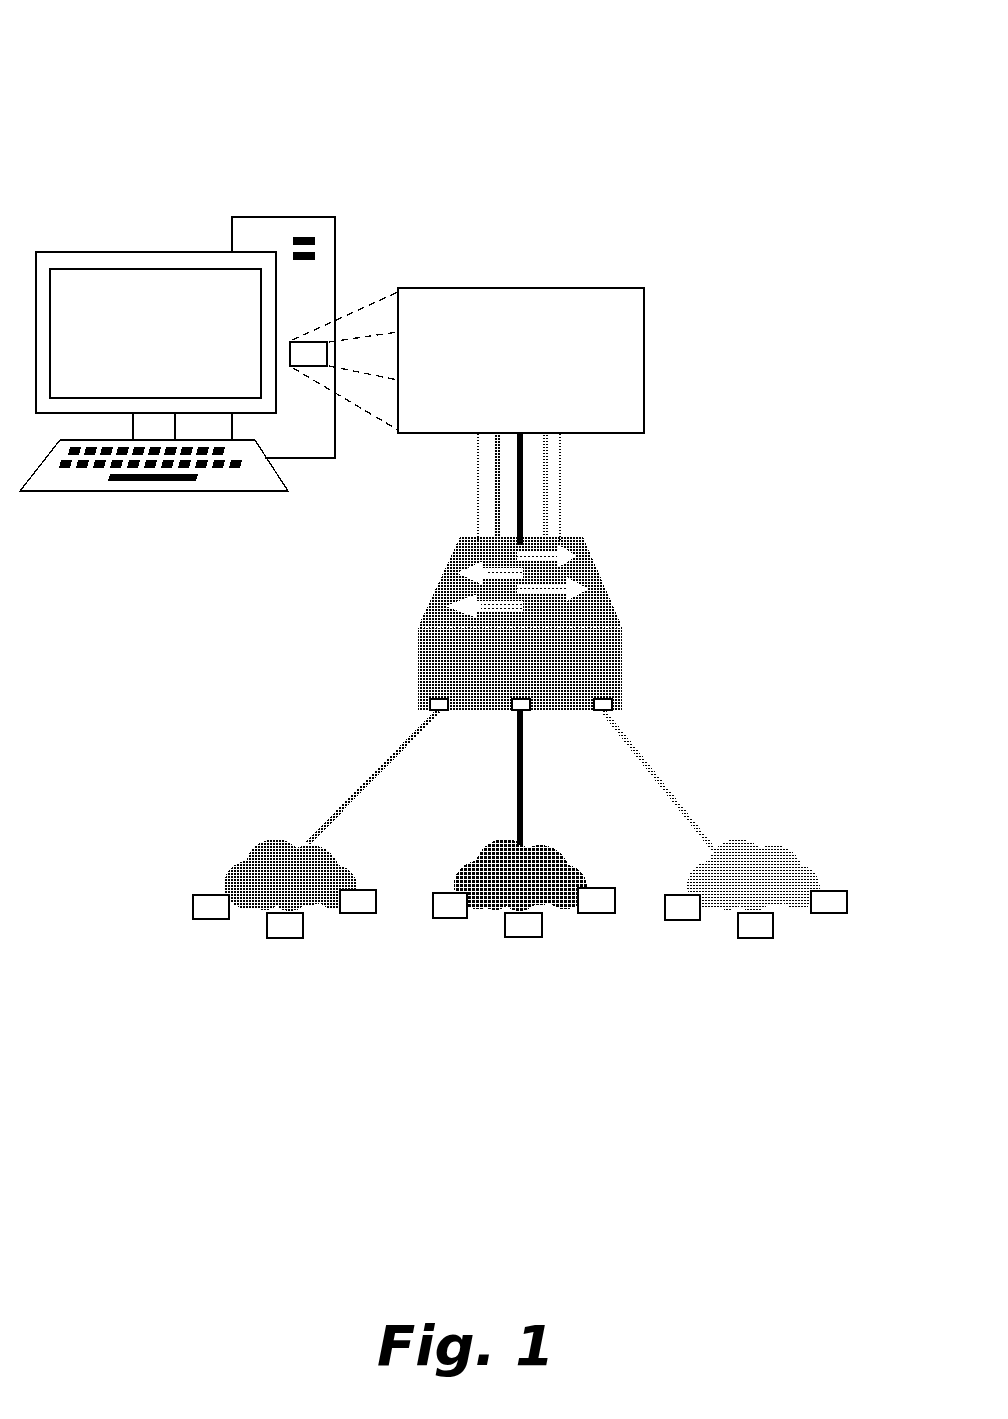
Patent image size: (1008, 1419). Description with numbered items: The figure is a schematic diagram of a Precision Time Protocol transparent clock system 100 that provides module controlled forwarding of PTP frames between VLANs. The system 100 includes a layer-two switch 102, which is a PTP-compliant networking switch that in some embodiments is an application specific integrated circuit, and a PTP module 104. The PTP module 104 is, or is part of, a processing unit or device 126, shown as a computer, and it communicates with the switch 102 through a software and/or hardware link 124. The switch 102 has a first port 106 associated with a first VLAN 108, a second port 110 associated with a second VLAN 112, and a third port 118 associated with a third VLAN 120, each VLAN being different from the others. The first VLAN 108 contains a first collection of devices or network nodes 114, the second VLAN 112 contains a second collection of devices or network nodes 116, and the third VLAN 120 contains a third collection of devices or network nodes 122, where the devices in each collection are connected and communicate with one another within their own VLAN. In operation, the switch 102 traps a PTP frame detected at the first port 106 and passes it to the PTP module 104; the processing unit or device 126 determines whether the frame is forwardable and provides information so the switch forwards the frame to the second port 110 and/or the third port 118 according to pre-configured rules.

The PTP transparent clock system 100 is at (118, 58).
The Layer 2 switch 102 is at (448, 585).
The PTP module 104 is at (307, 355).
The first port 106 is at (438, 700).
The first VLAN 108 is at (285, 860).
The second port 110 is at (518, 713).
The second VLAN 112 is at (518, 863).
The first collection of devices or network nodes 114 is at (395, 865).
The second collection of devices or network nodes 116 is at (632, 865).
The third port 118 is at (603, 700).
The third VLAN 120 is at (762, 865).
The third collection of devices or network nodes 122 is at (865, 865).
The software and/or hardware link 124 is at (478, 495).
The processing unit or device 126 is at (308, 232).